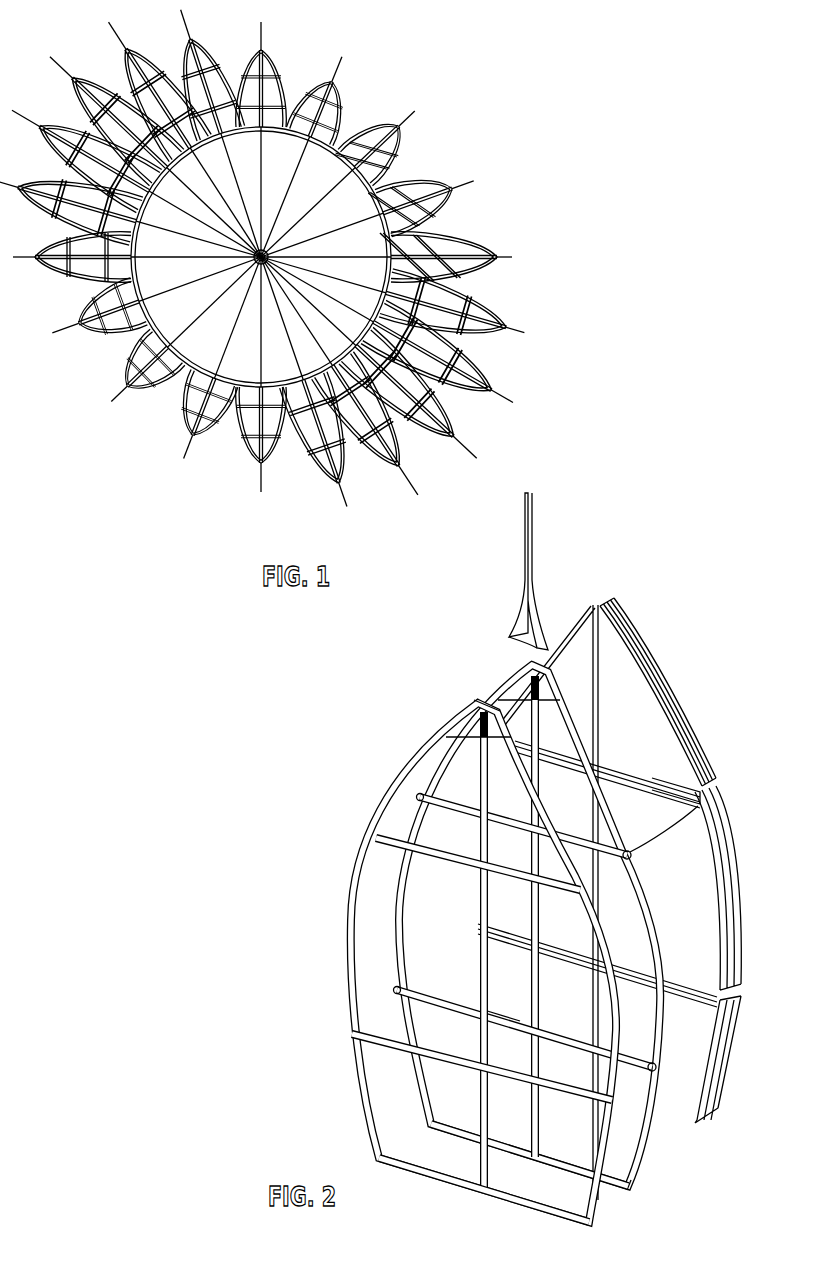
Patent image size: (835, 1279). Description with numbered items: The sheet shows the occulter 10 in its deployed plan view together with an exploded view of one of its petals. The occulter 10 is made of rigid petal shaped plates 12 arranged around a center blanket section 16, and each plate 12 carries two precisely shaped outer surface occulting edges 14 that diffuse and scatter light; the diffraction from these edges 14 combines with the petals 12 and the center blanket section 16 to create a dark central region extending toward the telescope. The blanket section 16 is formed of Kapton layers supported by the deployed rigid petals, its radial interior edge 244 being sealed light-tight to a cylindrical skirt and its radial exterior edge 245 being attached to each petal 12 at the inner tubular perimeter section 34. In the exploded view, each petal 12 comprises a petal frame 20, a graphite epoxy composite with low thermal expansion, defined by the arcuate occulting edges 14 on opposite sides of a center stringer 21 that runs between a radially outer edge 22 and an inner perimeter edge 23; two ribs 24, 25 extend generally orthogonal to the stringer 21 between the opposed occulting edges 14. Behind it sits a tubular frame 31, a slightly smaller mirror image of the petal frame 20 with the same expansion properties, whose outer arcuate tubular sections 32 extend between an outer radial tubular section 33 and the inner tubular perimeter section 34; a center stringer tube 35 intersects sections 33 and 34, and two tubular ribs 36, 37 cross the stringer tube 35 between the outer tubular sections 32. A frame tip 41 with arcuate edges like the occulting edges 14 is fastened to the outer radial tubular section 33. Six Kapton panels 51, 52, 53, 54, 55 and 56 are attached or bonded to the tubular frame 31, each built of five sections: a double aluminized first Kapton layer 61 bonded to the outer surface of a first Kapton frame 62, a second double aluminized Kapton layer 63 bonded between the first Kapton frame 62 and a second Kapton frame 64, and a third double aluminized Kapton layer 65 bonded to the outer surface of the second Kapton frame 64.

In FIG. 1, the occulter 10 is at (80, 38).
In FIG. 1, the petal shaped plate 12 is at (398, 149).
In FIG. 1, the center blanket section 16 is at (376, 303).
In FIG. 1, the radial interior edge 244 is at (338, 112).
In FIG. 1, the radial exterior edge 245 is at (142, 349).
In FIG. 2, the outer surface occulting edge 14 is at (378, 828).
In FIG. 2, the petal frame 20 is at (346, 962).
In FIG. 2, the center stringer 21 is at (476, 973).
In FIG. 2, the radially outer edge 22 is at (466, 714).
In FIG. 2, the inner perimeter edge 23 is at (480, 1190).
In FIG. 2, the rib 24 is at (448, 862).
In FIG. 2, the rib 25 is at (430, 1055).
In FIG. 2, the tubular frame 31 is at (644, 1180).
In FIG. 2, the outer arcuate tubular section 32 is at (660, 925).
In FIG. 2, the outer radial tubular section 33 is at (523, 668).
In FIG. 2, the inner tubular perimeter section 34 is at (546, 1164).
In FIG. 2, the center stringer tube 35 is at (533, 1002).
In FIG. 2, the tubular rib 36 is at (704, 792).
In FIG. 2, the tubular rib 37 is at (650, 1060).
In FIG. 2, the frame tip 41 is at (537, 555).
In FIG. 2, the Kapton panel 51 is at (545, 648).
In FIG. 2, the Kapton panel 52 is at (672, 768).
In FIG. 2, the Kapton panel 53 is at (573, 817).
In FIG. 2, the Kapton panel 54 is at (710, 872).
In FIG. 2, the Kapton panel 55 is at (493, 998).
In FIG. 2, the Kapton panel 56 is at (710, 1058).
In FIG. 2, the first Kapton layer 61 is at (616, 618).
In FIG. 2, the first Kapton frame 62 is at (625, 642).
In FIG. 2, the second Kapton layer 63 is at (638, 667).
In FIG. 2, the second Kapton frame 64 is at (652, 692).
In FIG. 2, the third Kapton layer 65 is at (665, 716).